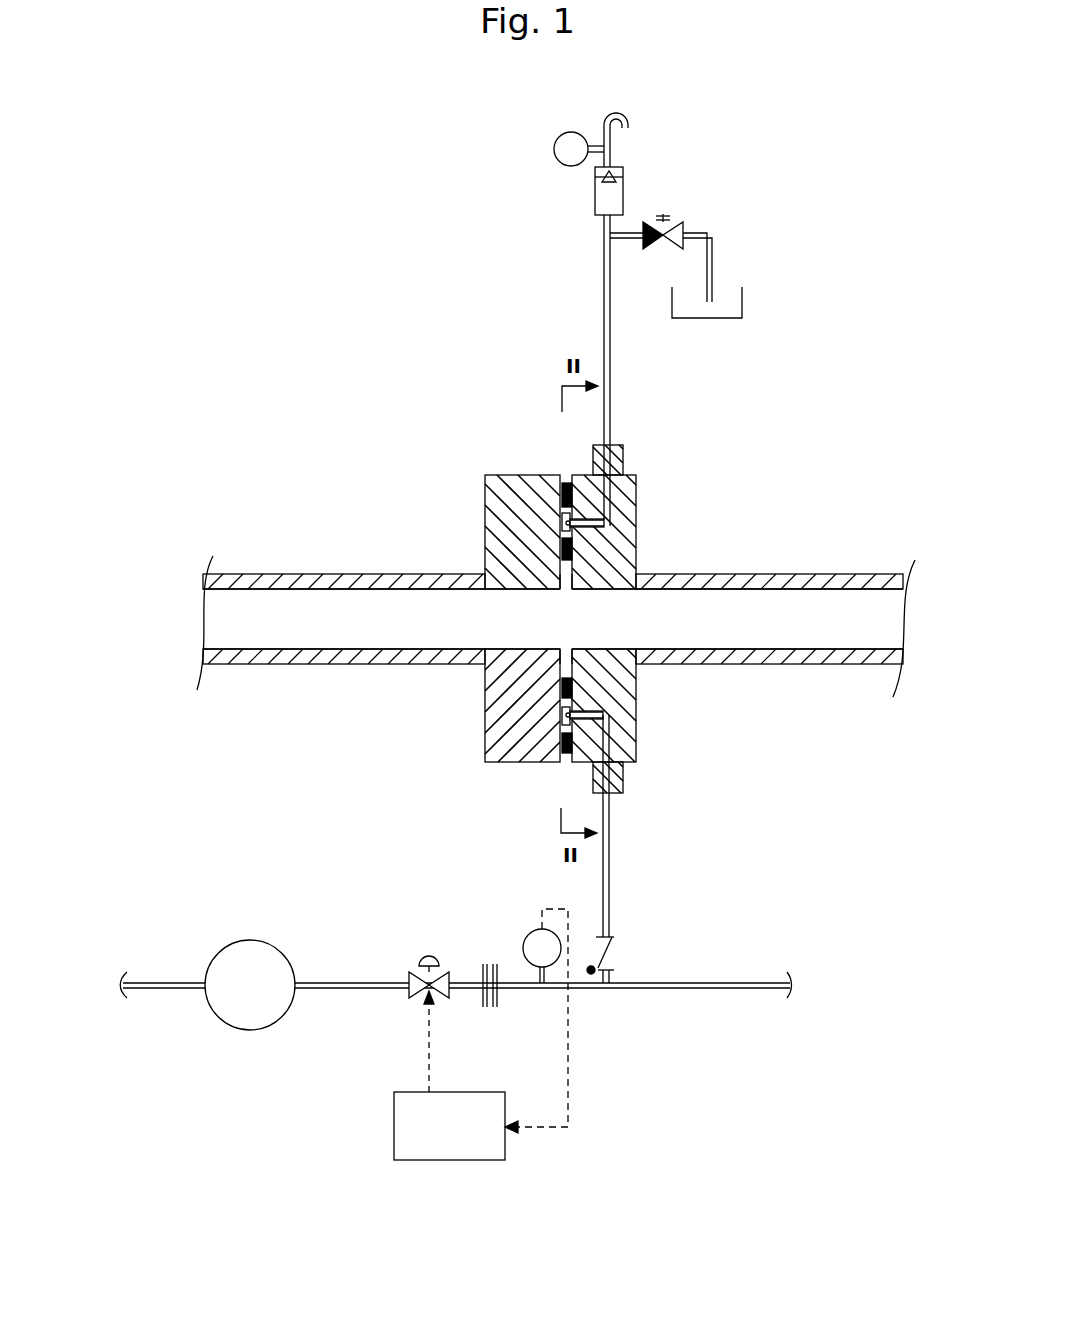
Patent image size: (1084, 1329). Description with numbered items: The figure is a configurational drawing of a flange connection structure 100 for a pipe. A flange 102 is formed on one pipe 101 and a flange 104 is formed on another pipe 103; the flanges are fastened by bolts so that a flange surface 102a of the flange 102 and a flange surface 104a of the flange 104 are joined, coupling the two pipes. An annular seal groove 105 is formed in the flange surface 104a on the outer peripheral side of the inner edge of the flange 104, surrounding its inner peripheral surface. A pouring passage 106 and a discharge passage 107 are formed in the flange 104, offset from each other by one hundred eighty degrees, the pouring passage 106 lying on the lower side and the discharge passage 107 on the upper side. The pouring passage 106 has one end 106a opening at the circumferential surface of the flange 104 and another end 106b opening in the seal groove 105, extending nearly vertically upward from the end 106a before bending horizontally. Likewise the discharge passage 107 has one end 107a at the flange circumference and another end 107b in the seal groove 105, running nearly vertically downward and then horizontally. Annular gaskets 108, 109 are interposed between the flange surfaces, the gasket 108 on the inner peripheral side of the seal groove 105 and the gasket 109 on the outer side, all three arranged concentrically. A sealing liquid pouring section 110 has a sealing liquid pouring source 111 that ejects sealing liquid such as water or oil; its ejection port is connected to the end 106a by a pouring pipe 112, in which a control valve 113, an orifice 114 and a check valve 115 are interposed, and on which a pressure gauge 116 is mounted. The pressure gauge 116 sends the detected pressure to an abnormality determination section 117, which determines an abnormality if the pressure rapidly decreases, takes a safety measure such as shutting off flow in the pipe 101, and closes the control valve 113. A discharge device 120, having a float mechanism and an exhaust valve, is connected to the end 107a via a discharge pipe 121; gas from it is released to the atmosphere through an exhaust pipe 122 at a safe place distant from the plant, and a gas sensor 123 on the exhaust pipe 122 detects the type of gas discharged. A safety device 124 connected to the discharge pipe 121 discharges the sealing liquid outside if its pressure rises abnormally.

The flange connection structure 100 is at (248, 425).
The pipe 101 is at (242, 668).
The flange 102 is at (562, 623).
The flange surface 102a is at (577, 591).
The pipe 103 is at (864, 665).
The flange 104 is at (644, 746).
The flange surface 104a is at (548, 650).
The seal groove 105 is at (525, 498).
The pouring passage 106 is at (628, 778).
The one end of pouring passage 106a is at (615, 793).
The other end of pouring passage 106b is at (578, 716).
The discharge passage 107 is at (612, 490).
The one end of discharge passage 107a is at (612, 445).
The other end of discharge passage 107b is at (578, 528).
The gasket 108 is at (560, 552).
The gasket 109 is at (562, 490).
The sealing liquid pouring section 110 is at (214, 1081).
The sealing liquid pouring source 111 is at (243, 958).
The pouring pipe 112 is at (612, 915).
The control valve 113 is at (420, 1000).
The orifice 114 is at (487, 1010).
The check valve 115 is at (620, 966).
The pressure gauge 116 is at (535, 928).
The abnormality determination section 117 is at (430, 1162).
The discharge device 120 is at (598, 195).
The discharge pipe 121 is at (612, 340).
The exhaust pipe 122 is at (604, 118).
The gas sensor 123 is at (554, 149).
The safety device 124 is at (690, 222).